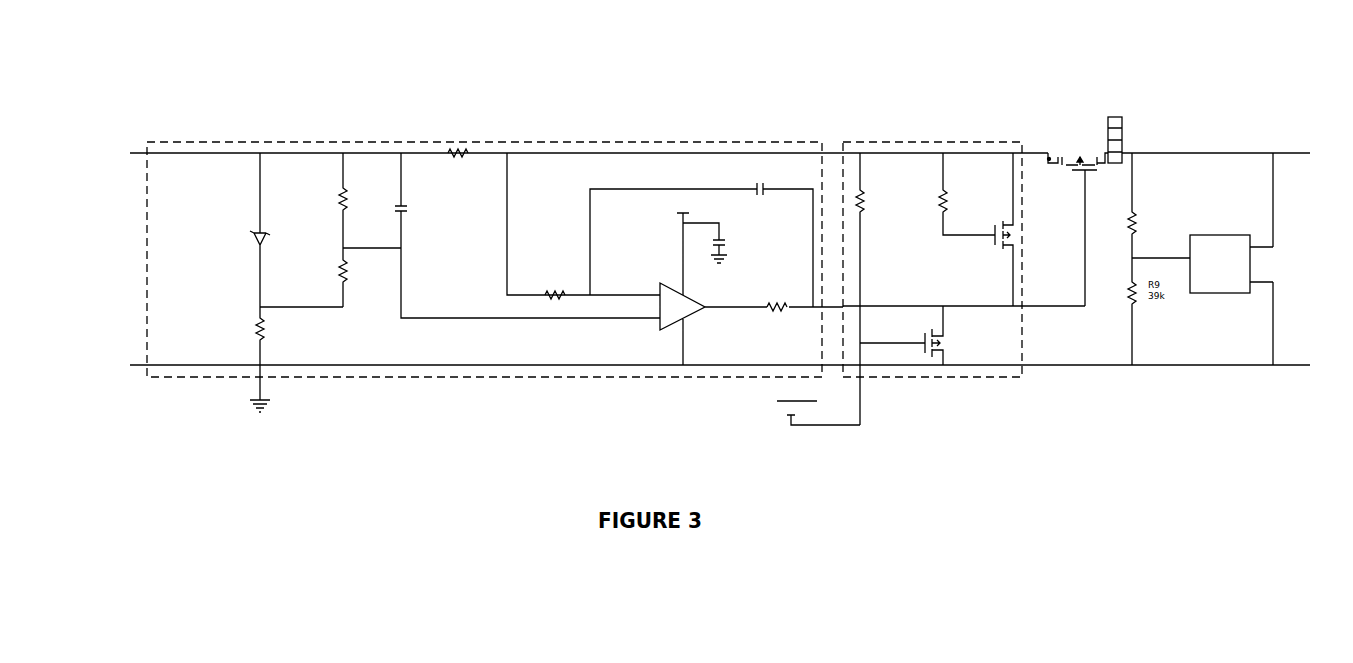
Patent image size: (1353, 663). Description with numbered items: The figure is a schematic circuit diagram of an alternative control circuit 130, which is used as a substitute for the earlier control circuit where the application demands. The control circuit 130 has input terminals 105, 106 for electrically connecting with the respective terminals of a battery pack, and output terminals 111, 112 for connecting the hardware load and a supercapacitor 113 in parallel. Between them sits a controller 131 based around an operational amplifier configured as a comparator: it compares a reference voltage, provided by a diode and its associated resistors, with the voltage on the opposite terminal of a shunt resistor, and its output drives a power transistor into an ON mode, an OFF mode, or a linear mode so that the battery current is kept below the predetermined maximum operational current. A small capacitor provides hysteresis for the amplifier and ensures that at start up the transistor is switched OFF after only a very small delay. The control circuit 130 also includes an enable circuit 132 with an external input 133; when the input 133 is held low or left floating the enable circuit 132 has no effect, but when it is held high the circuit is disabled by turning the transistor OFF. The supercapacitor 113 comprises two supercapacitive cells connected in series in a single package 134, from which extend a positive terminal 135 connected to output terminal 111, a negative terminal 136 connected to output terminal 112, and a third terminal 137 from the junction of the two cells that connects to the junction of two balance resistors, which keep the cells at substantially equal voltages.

The control circuit 130 is at (525, 55).
The input terminal 105 is at (140, 153).
The input terminal 106 is at (142, 365).
The controller 131 is at (427, 377).
The enable circuit 132 is at (943, 142).
The external input 133 is at (810, 427).
The output terminal 111 is at (1130, 153).
The output terminal 112 is at (1117, 367).
The supercapacitor 113 is at (1250, 260).
The single package 134 is at (1217, 278).
The positive terminal 135 is at (1275, 205).
The negative terminal 136 is at (1274, 330).
The third terminal 137 is at (1170, 242).